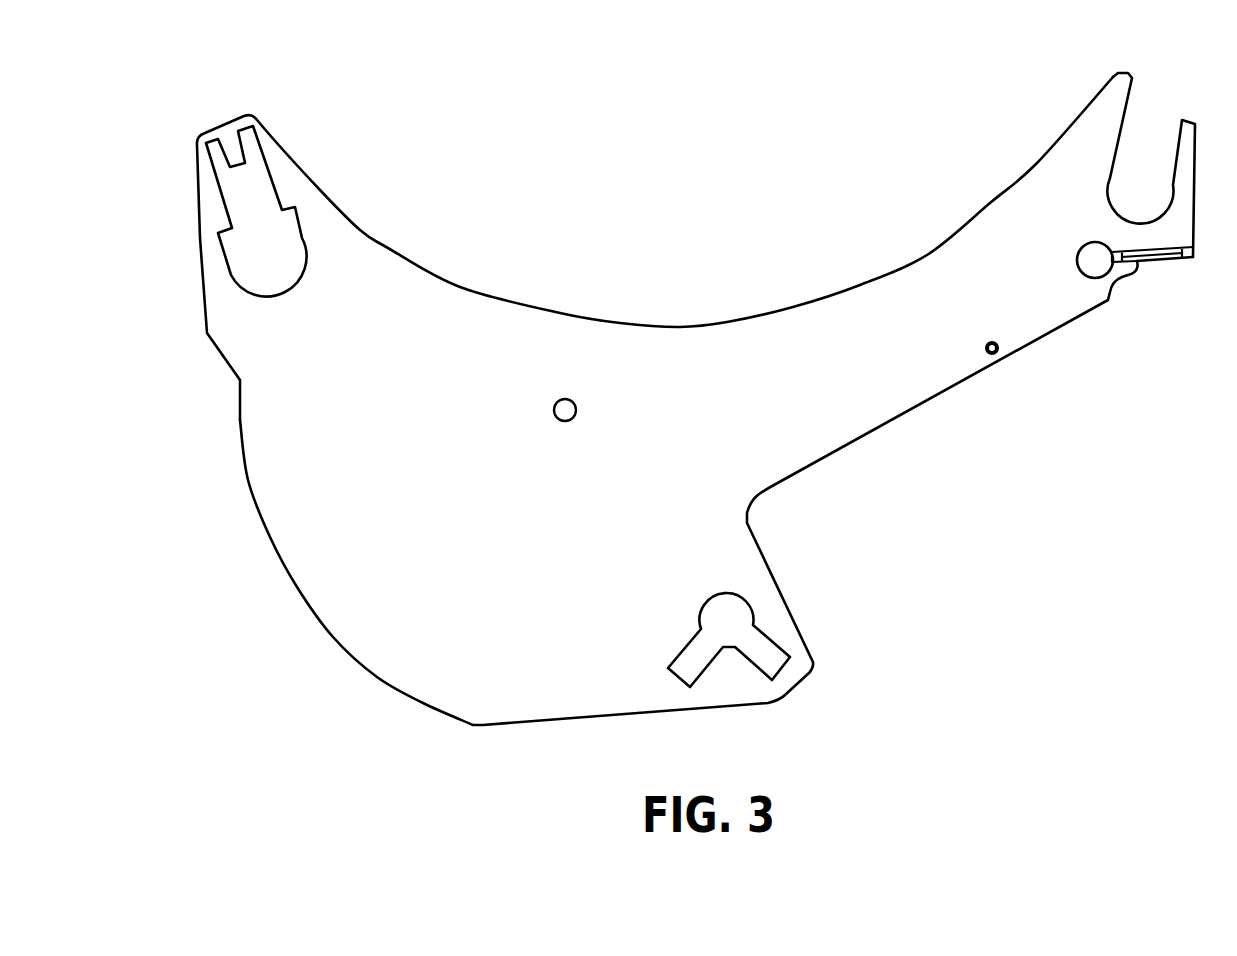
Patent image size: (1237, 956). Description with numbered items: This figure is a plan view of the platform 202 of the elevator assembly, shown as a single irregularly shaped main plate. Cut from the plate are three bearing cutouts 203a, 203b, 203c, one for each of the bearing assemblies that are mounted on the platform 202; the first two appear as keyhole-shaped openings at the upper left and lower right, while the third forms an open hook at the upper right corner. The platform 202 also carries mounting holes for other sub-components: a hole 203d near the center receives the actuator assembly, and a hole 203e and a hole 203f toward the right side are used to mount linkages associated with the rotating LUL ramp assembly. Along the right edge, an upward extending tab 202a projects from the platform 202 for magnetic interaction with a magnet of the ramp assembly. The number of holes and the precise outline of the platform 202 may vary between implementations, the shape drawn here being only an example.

The platform 202 is at (373, 275).
The upward extending tab 202a is at (1160, 257).
The bearing cutout 203a is at (288, 262).
The bearing cutout 203b is at (763, 653).
The bearing cutout 203c is at (1142, 193).
The hole 203d is at (567, 400).
The hole 203e is at (990, 340).
The hole 203f is at (1095, 260).